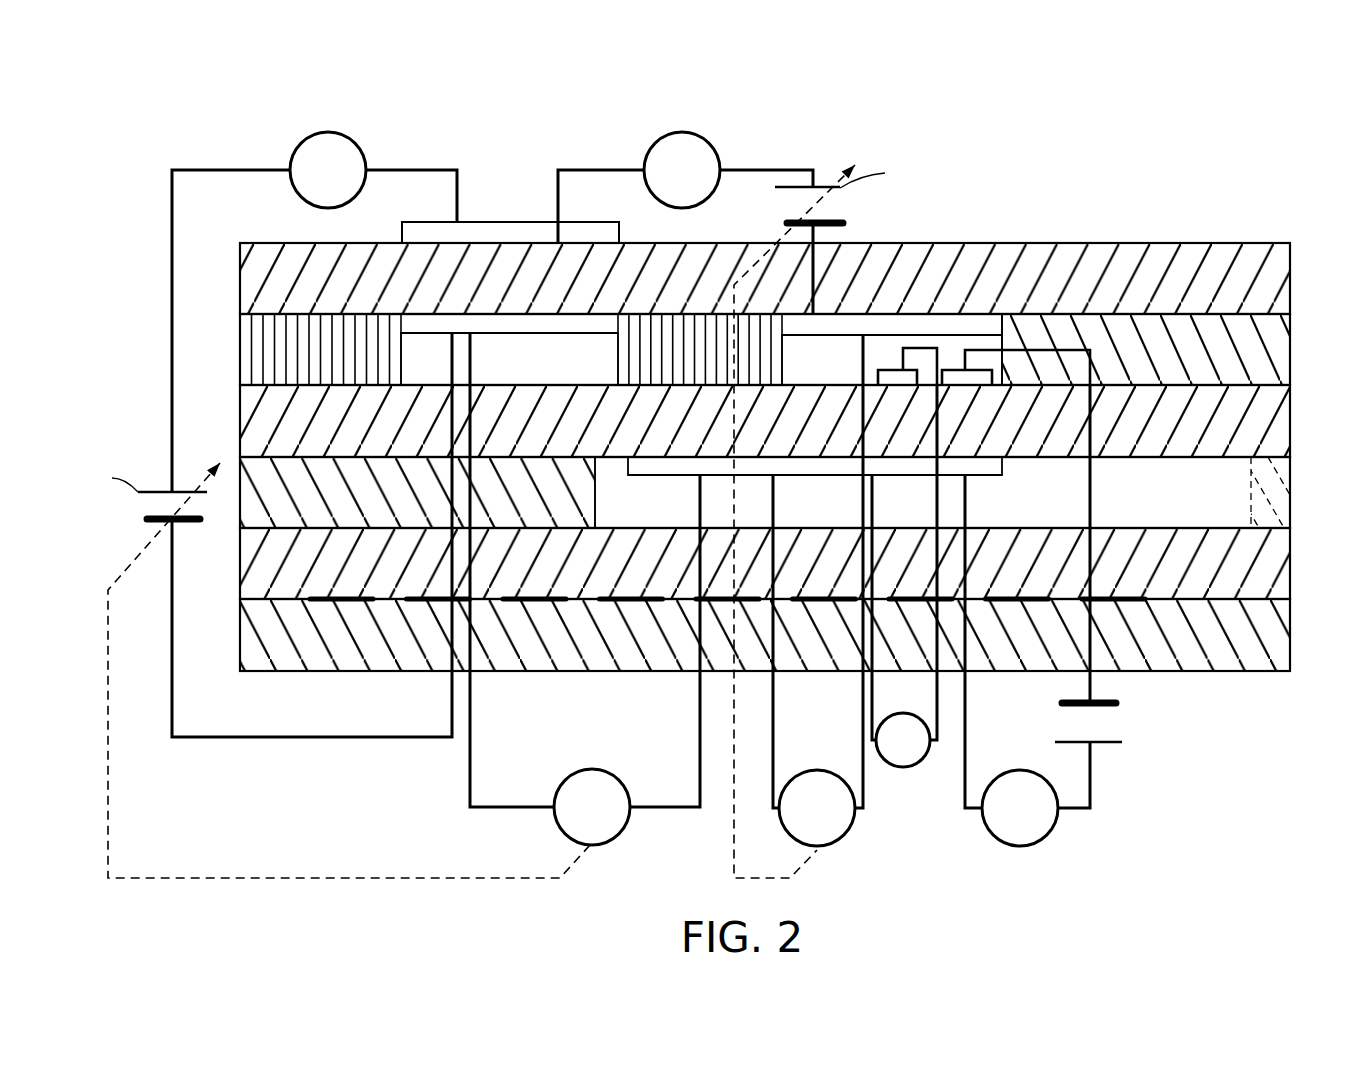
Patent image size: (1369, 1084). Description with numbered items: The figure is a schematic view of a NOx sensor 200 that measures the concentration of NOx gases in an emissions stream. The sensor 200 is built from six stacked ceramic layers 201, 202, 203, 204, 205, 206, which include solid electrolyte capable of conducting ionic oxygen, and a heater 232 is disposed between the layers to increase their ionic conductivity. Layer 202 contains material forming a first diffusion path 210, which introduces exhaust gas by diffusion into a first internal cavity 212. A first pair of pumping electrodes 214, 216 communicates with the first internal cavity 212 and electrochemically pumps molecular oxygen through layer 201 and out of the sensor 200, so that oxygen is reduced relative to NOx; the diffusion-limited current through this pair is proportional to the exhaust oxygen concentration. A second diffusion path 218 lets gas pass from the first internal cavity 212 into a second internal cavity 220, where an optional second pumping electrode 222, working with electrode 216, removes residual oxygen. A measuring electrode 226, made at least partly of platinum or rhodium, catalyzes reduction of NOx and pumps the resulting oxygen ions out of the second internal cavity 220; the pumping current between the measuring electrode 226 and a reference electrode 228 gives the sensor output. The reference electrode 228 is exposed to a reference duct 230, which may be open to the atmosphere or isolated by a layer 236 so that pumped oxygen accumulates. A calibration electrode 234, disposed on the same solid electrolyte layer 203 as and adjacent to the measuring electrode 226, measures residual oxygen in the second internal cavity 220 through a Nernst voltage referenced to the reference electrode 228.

The NOx sensor 200 is at (712, 464).
The ceramic layer 201 is at (1268, 275).
The ceramic layer 202 is at (1272, 348).
The solid electrolyte layer 203 is at (1272, 420).
The ceramic layer 204 is at (600, 493).
The ceramic layer 205 is at (1280, 562).
The ceramic layer 206 is at (1280, 633).
The first diffusion path 210 is at (318, 332).
The first internal cavity 212 is at (527, 372).
The first pumping electrode 214 is at (512, 323).
The first pumping electrode 216 is at (518, 228).
The second diffusion path 218 is at (692, 322).
The second internal cavity 220 is at (803, 372).
The second pumping electrode 222 is at (945, 322).
The measuring electrode 226 is at (995, 377).
The reference electrode 228 is at (1005, 472).
The reference duct 230 is at (1166, 503).
The heater 232 is at (407, 600).
The calibration electrode 234 is at (893, 370).
The layer 236 is at (1290, 490).